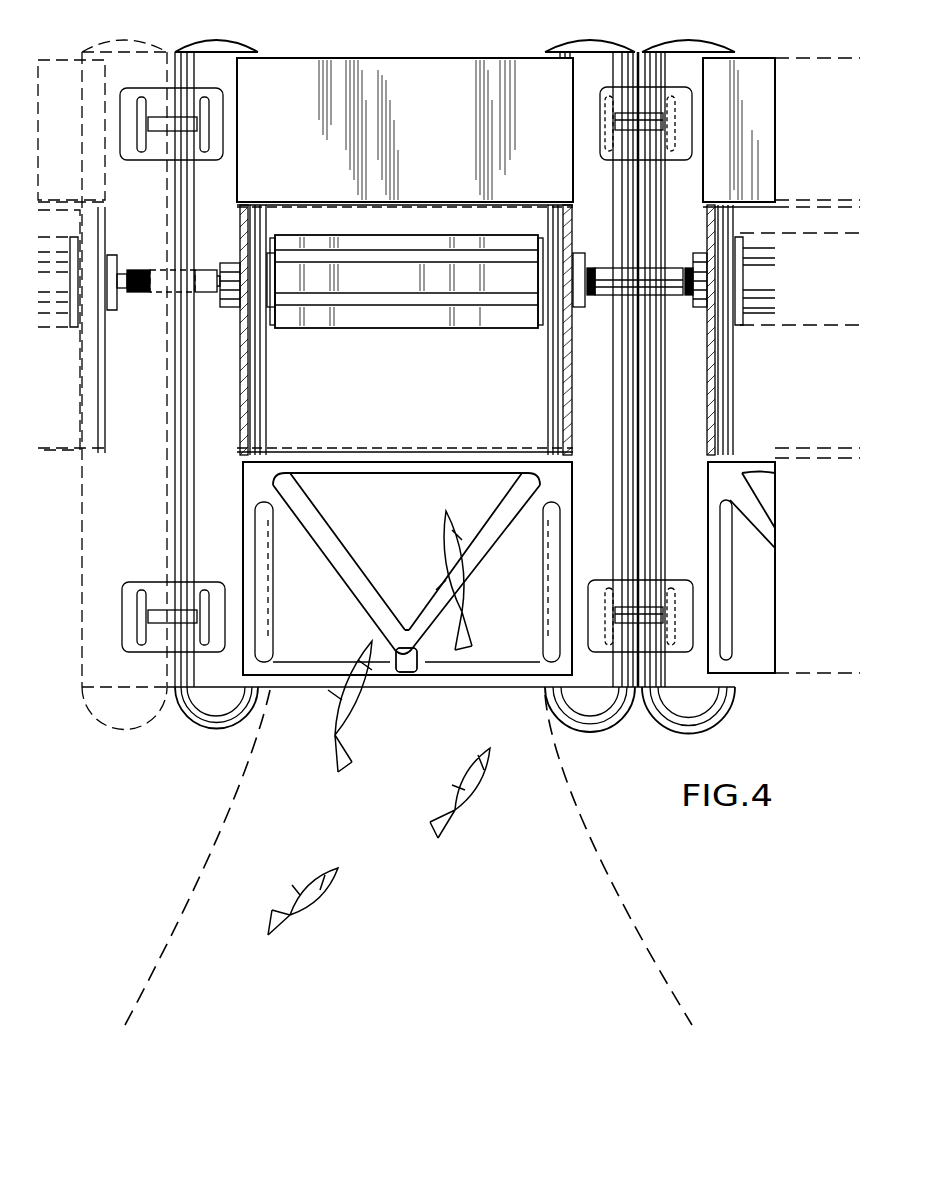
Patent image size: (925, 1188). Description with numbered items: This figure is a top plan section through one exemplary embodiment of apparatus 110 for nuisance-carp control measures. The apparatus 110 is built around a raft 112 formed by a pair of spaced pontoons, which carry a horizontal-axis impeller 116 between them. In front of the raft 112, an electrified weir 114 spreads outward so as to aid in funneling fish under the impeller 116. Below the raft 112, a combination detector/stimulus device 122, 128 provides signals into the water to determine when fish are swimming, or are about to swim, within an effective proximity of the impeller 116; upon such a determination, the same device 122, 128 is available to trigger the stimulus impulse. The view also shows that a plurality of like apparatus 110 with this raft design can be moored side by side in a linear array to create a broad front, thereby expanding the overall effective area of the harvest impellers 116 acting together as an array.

The apparatus 110 is at (110, 42).
The raft 112 is at (248, 44).
The electrified weir 114 is at (583, 817).
The horizontal-axis impeller 116 is at (382, 318).
The detector/stimulus device 122 is at (387, 677).
The detector/stimulus device 128 is at (406, 660).